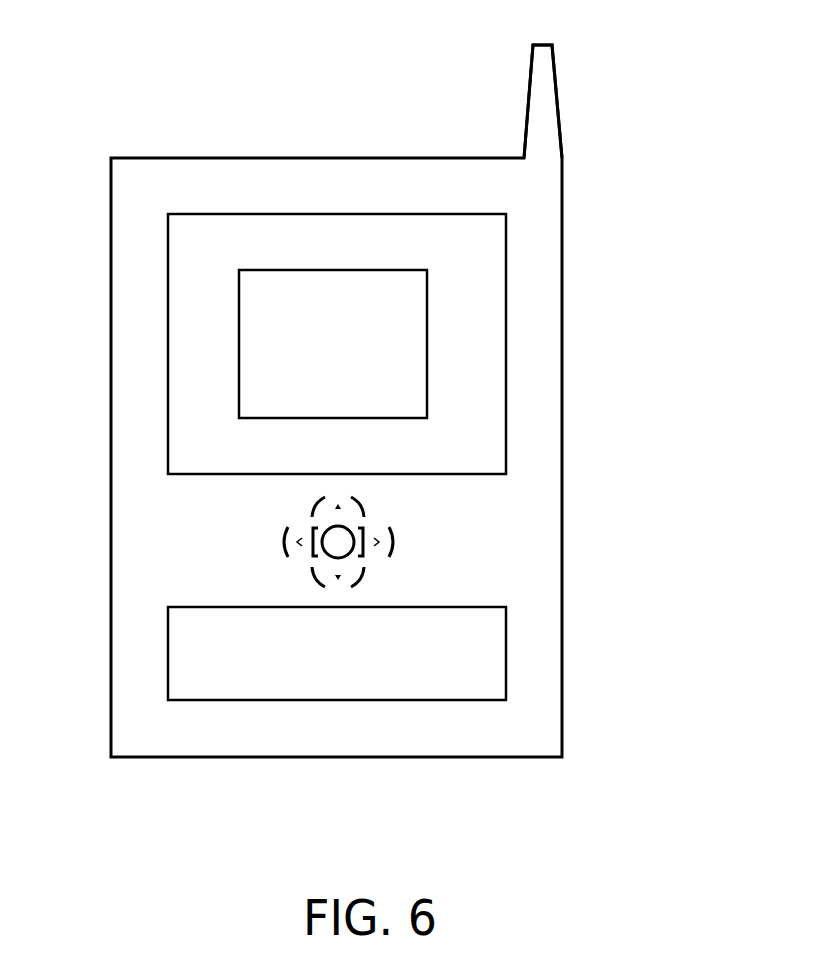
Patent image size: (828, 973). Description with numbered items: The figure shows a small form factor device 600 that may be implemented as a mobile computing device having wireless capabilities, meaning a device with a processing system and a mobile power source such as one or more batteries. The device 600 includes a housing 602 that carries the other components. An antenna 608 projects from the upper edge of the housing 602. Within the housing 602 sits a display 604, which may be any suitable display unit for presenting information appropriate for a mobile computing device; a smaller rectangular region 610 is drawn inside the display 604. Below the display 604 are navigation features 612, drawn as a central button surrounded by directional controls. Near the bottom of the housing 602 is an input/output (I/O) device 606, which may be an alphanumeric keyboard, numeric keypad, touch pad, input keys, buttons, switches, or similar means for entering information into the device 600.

The small form factor device 600 is at (125, 59).
The housing 602 is at (562, 456).
The display 604 is at (506, 232).
The input/output (I/O) device 606 is at (506, 645).
The antenna 608 is at (528, 93).
The display window 610 is at (428, 363).
The navigation features 612 is at (410, 532).